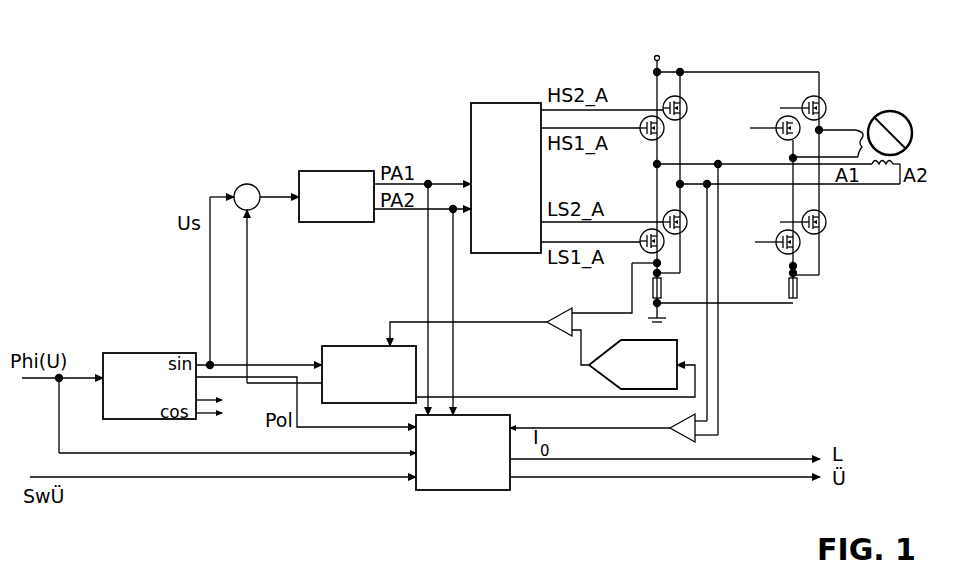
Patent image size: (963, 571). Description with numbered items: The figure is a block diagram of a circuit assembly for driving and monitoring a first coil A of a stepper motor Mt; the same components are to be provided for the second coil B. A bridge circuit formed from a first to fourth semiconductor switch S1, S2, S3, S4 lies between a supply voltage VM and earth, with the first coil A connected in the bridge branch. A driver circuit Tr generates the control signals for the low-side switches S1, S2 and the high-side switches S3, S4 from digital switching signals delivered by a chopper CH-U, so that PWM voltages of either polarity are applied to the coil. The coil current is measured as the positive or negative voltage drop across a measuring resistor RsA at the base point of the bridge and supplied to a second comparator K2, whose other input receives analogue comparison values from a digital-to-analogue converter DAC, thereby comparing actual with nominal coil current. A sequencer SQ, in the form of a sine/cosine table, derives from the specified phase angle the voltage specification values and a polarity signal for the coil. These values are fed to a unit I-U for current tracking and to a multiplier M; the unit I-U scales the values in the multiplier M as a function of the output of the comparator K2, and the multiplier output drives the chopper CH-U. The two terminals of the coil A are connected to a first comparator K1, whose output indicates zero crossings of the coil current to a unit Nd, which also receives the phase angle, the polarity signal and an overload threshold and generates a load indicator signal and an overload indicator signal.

The supply voltage VM is at (727, 52).
The first semiconductor switch S1 is at (639, 241).
The second semiconductor switch S2 is at (686, 232).
The third semiconductor switch S3 is at (646, 140).
The fourth semiconductor switch S4 is at (685, 100).
The measuring resistor RsA is at (672, 291).
The second coil B is at (843, 127).
The first coil A is at (882, 166).
The stepper motor Mt is at (899, 124).
The driver circuit Tr is at (506, 178).
The chopper CH-U is at (336, 196).
The multiplier M is at (247, 186).
The sequencer SQ is at (149, 386).
The unit for current tracking I-U is at (369, 374).
The second comparator K2 is at (511, 314).
The digital-to-analogue converter DAC is at (633, 364).
The first comparator K1 is at (614, 423).
The unit for generating a load indicator signal Nd is at (463, 452).